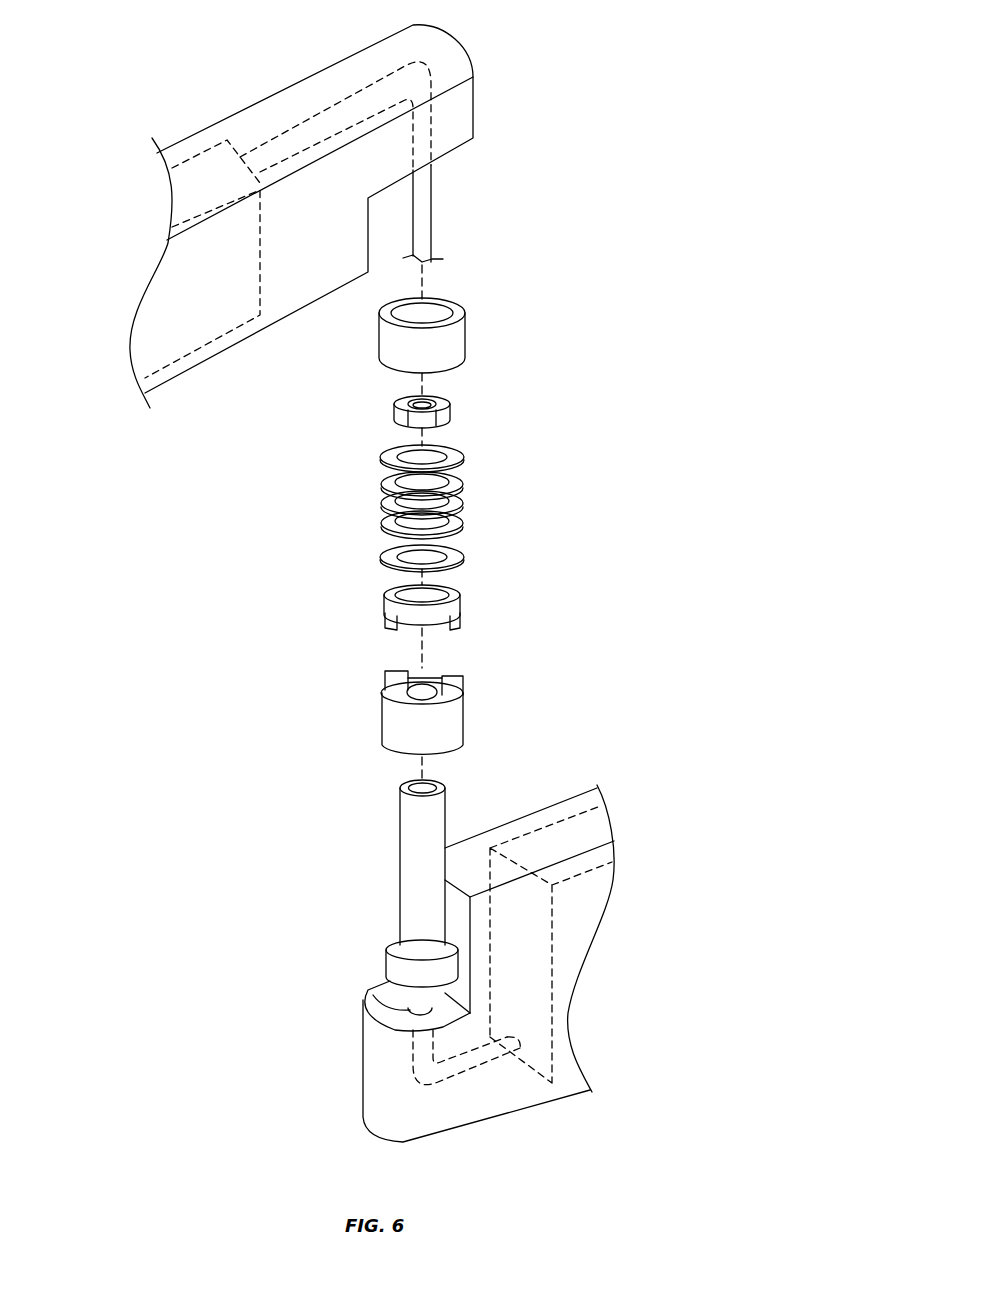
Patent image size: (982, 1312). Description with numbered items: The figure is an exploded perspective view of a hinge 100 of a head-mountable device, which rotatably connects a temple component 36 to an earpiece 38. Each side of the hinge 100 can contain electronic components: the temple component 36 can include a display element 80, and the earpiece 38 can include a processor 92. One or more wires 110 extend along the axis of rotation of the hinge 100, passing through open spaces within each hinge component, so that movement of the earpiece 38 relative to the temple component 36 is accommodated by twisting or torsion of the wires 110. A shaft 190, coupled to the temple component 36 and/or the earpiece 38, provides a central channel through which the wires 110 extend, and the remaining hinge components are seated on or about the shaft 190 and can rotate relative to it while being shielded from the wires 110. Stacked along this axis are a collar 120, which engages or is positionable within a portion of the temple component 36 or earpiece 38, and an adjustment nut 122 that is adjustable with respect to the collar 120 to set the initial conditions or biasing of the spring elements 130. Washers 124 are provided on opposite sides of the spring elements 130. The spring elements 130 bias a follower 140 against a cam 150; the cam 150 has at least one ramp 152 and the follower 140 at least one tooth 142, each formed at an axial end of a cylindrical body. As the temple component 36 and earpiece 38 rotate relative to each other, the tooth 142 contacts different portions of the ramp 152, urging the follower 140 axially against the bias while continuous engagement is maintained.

The temple component 36 is at (268, 96).
The earpiece 38 is at (512, 1108).
The display element 80 is at (188, 157).
The processor 92 is at (552, 822).
The hinge 100 is at (580, 440).
The wires 110 is at (433, 213).
The collar 120 is at (467, 333).
The adjustment nut 122 is at (453, 415).
The washers 124 is at (465, 457).
The spring elements 130 is at (467, 492).
The follower 140 is at (462, 607).
The tooth 142 is at (460, 628).
The cam 150 is at (465, 718).
The ramp 152 is at (383, 674).
The shaft 190 is at (400, 870).